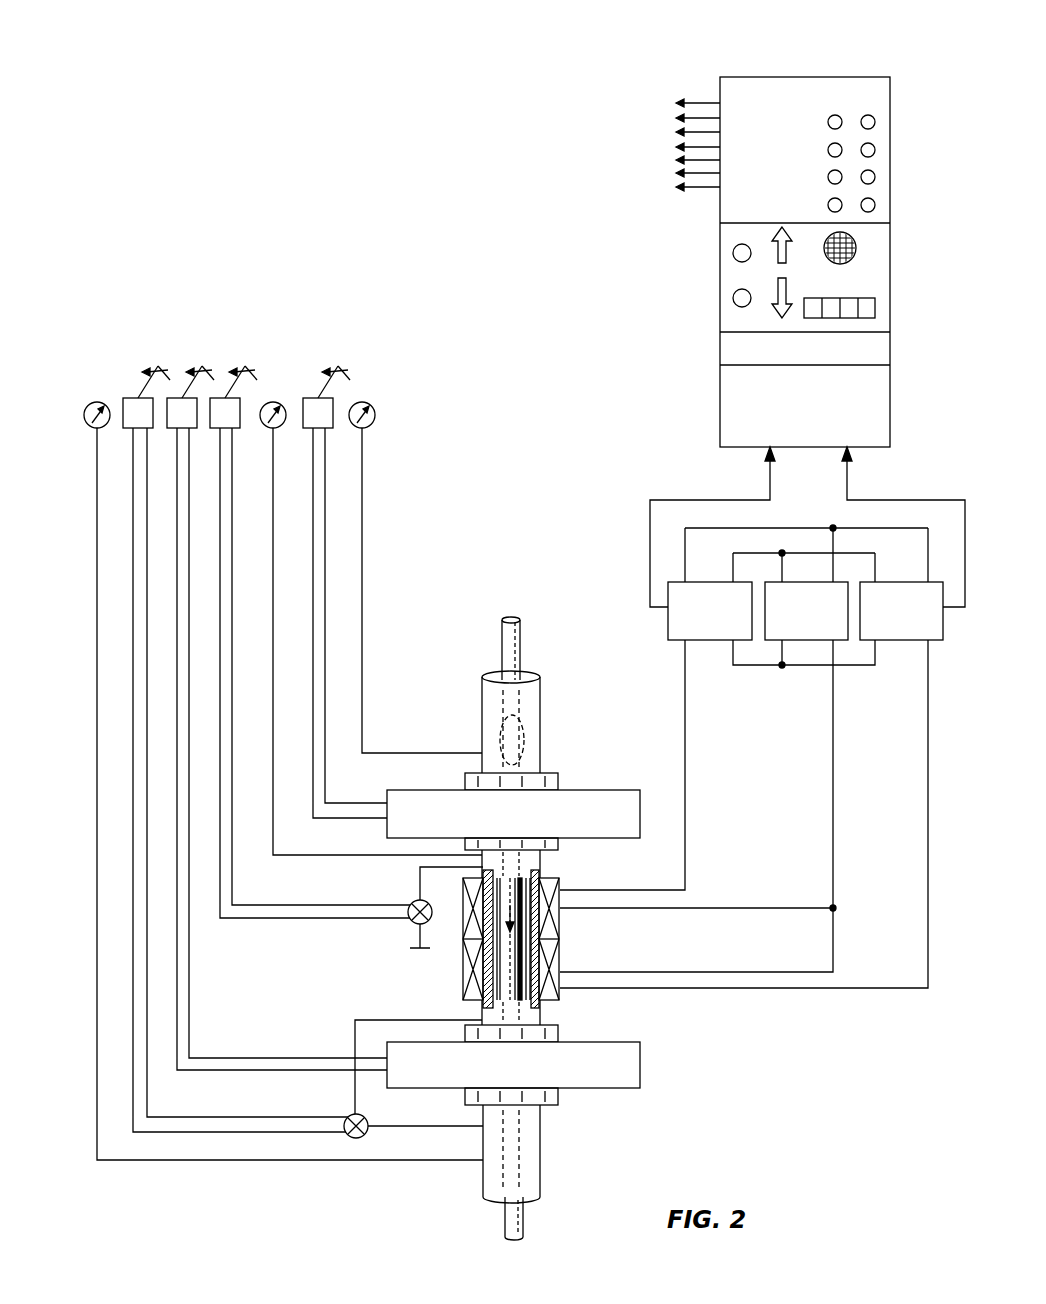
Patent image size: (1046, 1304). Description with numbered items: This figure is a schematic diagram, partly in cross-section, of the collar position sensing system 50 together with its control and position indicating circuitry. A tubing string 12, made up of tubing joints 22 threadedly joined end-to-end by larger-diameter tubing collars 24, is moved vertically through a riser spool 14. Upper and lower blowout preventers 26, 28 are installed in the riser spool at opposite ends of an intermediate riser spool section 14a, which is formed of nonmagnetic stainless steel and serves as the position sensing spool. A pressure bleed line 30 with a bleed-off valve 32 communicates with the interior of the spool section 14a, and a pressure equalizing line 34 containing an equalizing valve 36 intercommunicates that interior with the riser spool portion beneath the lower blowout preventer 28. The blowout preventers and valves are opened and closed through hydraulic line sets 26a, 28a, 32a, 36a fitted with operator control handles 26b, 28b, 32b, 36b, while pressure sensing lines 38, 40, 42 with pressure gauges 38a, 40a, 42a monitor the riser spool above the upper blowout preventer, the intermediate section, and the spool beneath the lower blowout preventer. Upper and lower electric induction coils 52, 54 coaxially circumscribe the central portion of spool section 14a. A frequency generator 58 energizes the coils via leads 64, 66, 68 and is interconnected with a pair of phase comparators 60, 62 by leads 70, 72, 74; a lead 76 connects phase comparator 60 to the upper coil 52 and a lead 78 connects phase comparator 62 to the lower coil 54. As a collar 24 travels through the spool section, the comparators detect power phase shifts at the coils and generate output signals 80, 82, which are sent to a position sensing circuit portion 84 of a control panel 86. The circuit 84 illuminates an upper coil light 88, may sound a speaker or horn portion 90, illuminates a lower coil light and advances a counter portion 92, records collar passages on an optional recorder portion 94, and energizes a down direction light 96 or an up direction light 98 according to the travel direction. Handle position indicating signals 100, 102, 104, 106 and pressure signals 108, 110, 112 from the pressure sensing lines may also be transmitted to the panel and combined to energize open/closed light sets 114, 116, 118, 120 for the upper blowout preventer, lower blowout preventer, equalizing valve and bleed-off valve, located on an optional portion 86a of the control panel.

The tubing string 12 is at (526, 644).
The riser spool 14 is at (547, 699).
The intermediate riser spool section 14a is at (540, 863).
The tubing joint 22 is at (503, 636).
The tubing collar 24 is at (526, 740).
The upper blowout preventer 26 is at (640, 818).
The hydraulic line set 26a is at (313, 497).
The operator control handle 26b is at (340, 371).
The lower blowout preventer 28 is at (640, 1064).
The hydraulic line set 28a is at (180, 985).
The operator control handle 28b is at (198, 364).
The pressure bleed line 30 is at (420, 887).
The bleed-off valve 32 is at (412, 925).
The hydraulic line set 32a is at (223, 891).
The operator control handle 32b is at (245, 364).
The pressure equalizing line 34 is at (428, 1020).
The equalizing valve 36 is at (366, 1117).
The hydraulic line set 36a is at (133, 1112).
The operator control handle 36b is at (150, 364).
The pressure sensing line 38 is at (363, 560).
The pressure gauge 38a is at (375, 413).
The pressure sensing line 40 is at (273, 643).
The pressure gauge 40a is at (273, 402).
The pressure sensing line 42 is at (97, 643).
The pressure gauge 42a is at (97, 402).
The collar position sensing system 50 is at (809, 1004).
The upper electric induction coil 52 is at (634, 529).
The lower electric induction coil 54 is at (559, 958).
The frequency generator 58 is at (810, 641).
The phase comparator 60 is at (714, 641).
The phase comparator 62 is at (898, 641).
The lead 64 is at (833, 782).
The lead 66 is at (742, 908).
The lead 68 is at (738, 972).
The lead 70 is at (790, 528).
The lead 72 is at (752, 540).
The lead 74 is at (765, 665).
The lead 76 is at (685, 738).
The lead 78 is at (928, 808).
The output signal 80 is at (650, 566).
The output signal 82 is at (908, 500).
The position sensing circuit portion 84 is at (720, 414).
The control panel 86 is at (893, 277).
The optional portion of control panel 86a is at (800, 77).
The upper coil light 88 is at (733, 255).
The speaker or horn portion 90 is at (856, 250).
The lower coil light and counter portion 92 is at (733, 298).
The recorder portion 94 is at (890, 352).
The down direction light 96 is at (776, 307).
The up direction light 98 is at (774, 232).
The handle position indicating signal 100 is at (678, 103).
The handle position indicating signal 102 is at (678, 118).
The handle position indicating signal 104 is at (678, 132).
The handle position indicating signal 106 is at (678, 147).
The pressure signal 108 is at (678, 160).
The pressure signal 110 is at (678, 173).
The pressure signal 112 is at (678, 187).
The open/closed light set 114 is at (875, 122).
The open/closed light set 116 is at (875, 150).
The open/closed light set 118 is at (875, 177).
The open/closed light set 120 is at (875, 205).